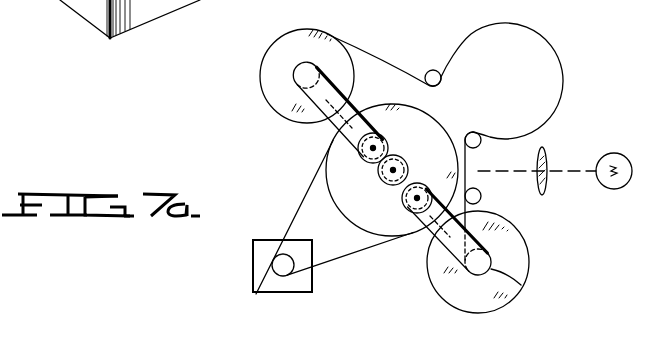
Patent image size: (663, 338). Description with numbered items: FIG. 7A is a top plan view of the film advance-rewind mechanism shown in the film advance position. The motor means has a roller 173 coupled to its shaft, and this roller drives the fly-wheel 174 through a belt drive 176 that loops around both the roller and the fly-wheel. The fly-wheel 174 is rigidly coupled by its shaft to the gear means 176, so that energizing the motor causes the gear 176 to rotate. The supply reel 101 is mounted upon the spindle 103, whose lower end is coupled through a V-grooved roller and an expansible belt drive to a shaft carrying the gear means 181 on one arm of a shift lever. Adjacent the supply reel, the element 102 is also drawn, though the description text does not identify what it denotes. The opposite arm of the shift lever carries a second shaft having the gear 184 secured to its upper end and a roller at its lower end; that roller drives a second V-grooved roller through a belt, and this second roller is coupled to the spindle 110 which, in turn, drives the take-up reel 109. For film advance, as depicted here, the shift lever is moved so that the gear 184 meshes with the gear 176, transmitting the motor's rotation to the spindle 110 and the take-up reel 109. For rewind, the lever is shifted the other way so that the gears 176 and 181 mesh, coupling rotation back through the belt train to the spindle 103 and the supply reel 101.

The reel 101 is at (253, 68).
The cam loop 102 is at (556, 47).
The spindle 103 is at (297, 84).
The take-up reel 109 is at (527, 248).
The spindle 110 is at (522, 286).
The roller 173 is at (258, 296).
The fly-wheel 174 is at (347, 212).
The belt drive and gear means 176 is at (308, 188).
The gear means 181 is at (389, 143).
The gear 184 is at (403, 207).